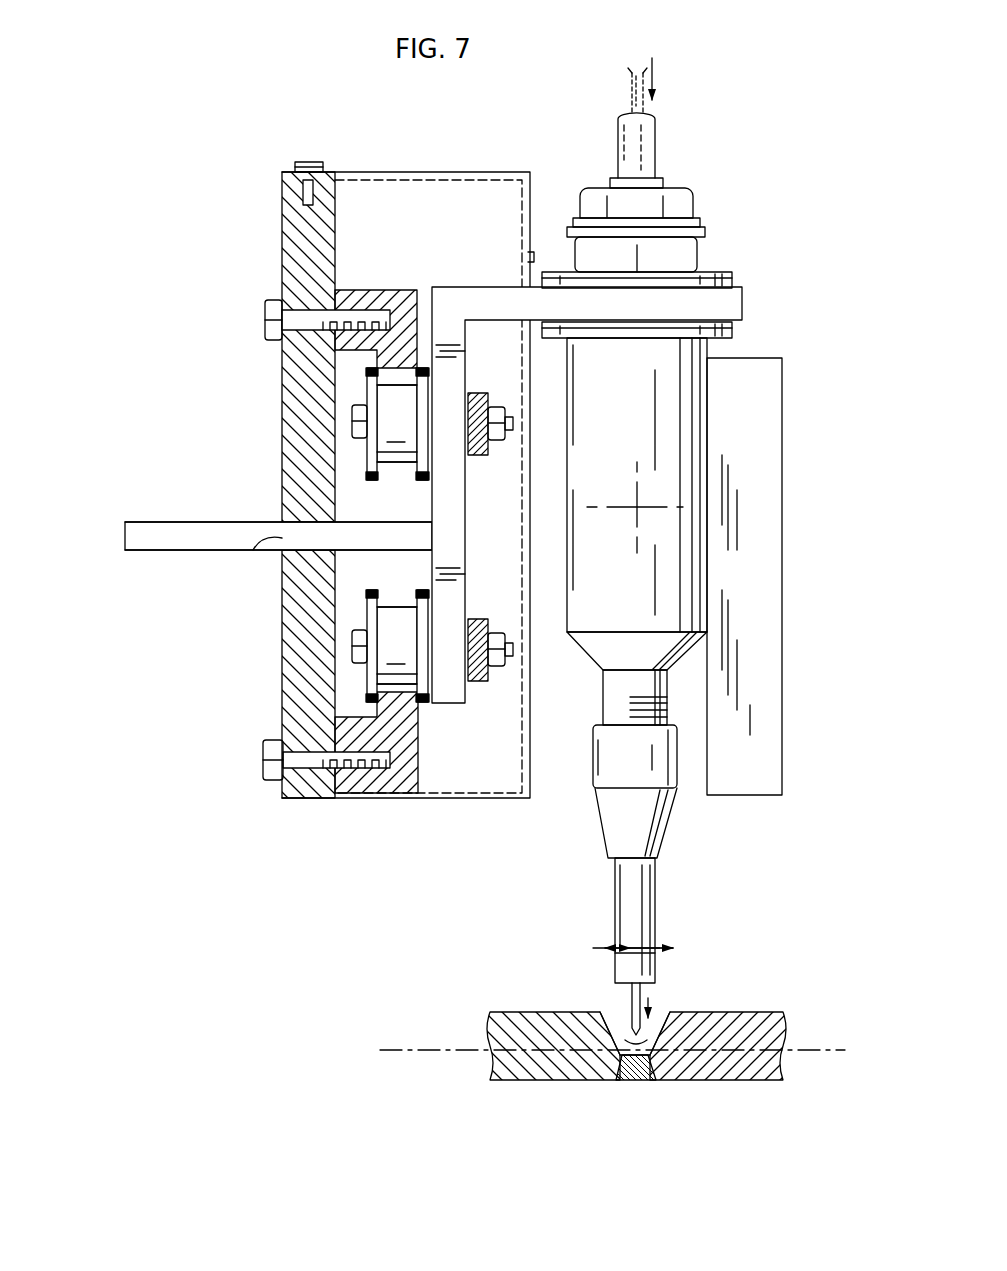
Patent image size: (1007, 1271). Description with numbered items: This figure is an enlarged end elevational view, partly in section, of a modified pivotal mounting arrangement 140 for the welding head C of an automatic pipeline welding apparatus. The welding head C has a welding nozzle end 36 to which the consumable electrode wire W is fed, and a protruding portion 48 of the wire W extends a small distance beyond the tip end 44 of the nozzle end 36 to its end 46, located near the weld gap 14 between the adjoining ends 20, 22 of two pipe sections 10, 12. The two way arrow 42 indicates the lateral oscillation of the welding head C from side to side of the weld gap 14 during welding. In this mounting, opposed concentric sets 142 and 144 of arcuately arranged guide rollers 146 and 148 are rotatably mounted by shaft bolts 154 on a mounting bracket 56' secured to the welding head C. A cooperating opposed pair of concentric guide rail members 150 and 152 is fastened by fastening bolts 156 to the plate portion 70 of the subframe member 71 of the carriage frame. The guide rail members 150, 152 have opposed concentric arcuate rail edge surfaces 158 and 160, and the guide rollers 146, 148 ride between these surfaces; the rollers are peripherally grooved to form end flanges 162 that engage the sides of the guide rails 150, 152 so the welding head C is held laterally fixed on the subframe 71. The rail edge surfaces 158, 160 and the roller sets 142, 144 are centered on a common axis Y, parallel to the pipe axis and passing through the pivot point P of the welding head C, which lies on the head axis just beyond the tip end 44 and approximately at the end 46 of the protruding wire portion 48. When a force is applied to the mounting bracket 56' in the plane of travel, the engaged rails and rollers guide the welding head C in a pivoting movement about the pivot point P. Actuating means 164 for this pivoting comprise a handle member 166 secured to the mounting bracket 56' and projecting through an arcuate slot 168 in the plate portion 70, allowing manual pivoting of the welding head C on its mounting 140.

The pipe section 10 is at (750, 1020).
The pipe section 12 is at (513, 1017).
The weld gap 14 is at (668, 1020).
The adjoining end 20 is at (700, 1050).
The adjoining end 22 is at (600, 1017).
The welding nozzle end 36 is at (643, 888).
The two way arrow 42 is at (633, 945).
The tip end 44 is at (658, 1017).
The end of protruding wire portion 46 is at (650, 1050).
The protruding portion of wire electrode 48 is at (628, 1022).
The mounting bracket 56' is at (575, 458).
The plate portion 70 is at (293, 217).
The subframe member 71 is at (762, 490).
The modified pivotal mounting arrangement 140 is at (347, 375).
The guide roller set 142 is at (358, 449).
The guide roller set 144 is at (352, 677).
The guide roller 146 is at (393, 448).
The guide roller 148 is at (395, 612).
The guide rail member 150 is at (387, 288).
The guide rail member 152 is at (378, 711).
The shaft bolt 154 is at (352, 413).
The fastening bolt 156 is at (265, 305).
The arcuate rail edge surface 158 is at (397, 402).
The arcuate rail edge surface 160 is at (427, 678).
The end flange 162 is at (370, 468).
The actuating means 164 is at (162, 558).
The handle member 166 is at (152, 528).
The arcuate slot 168 is at (253, 550).
The welding head C is at (722, 390).
The electrode wire W is at (630, 92).
The pivot point P is at (620, 1060).
The common axis Y is at (400, 1048).